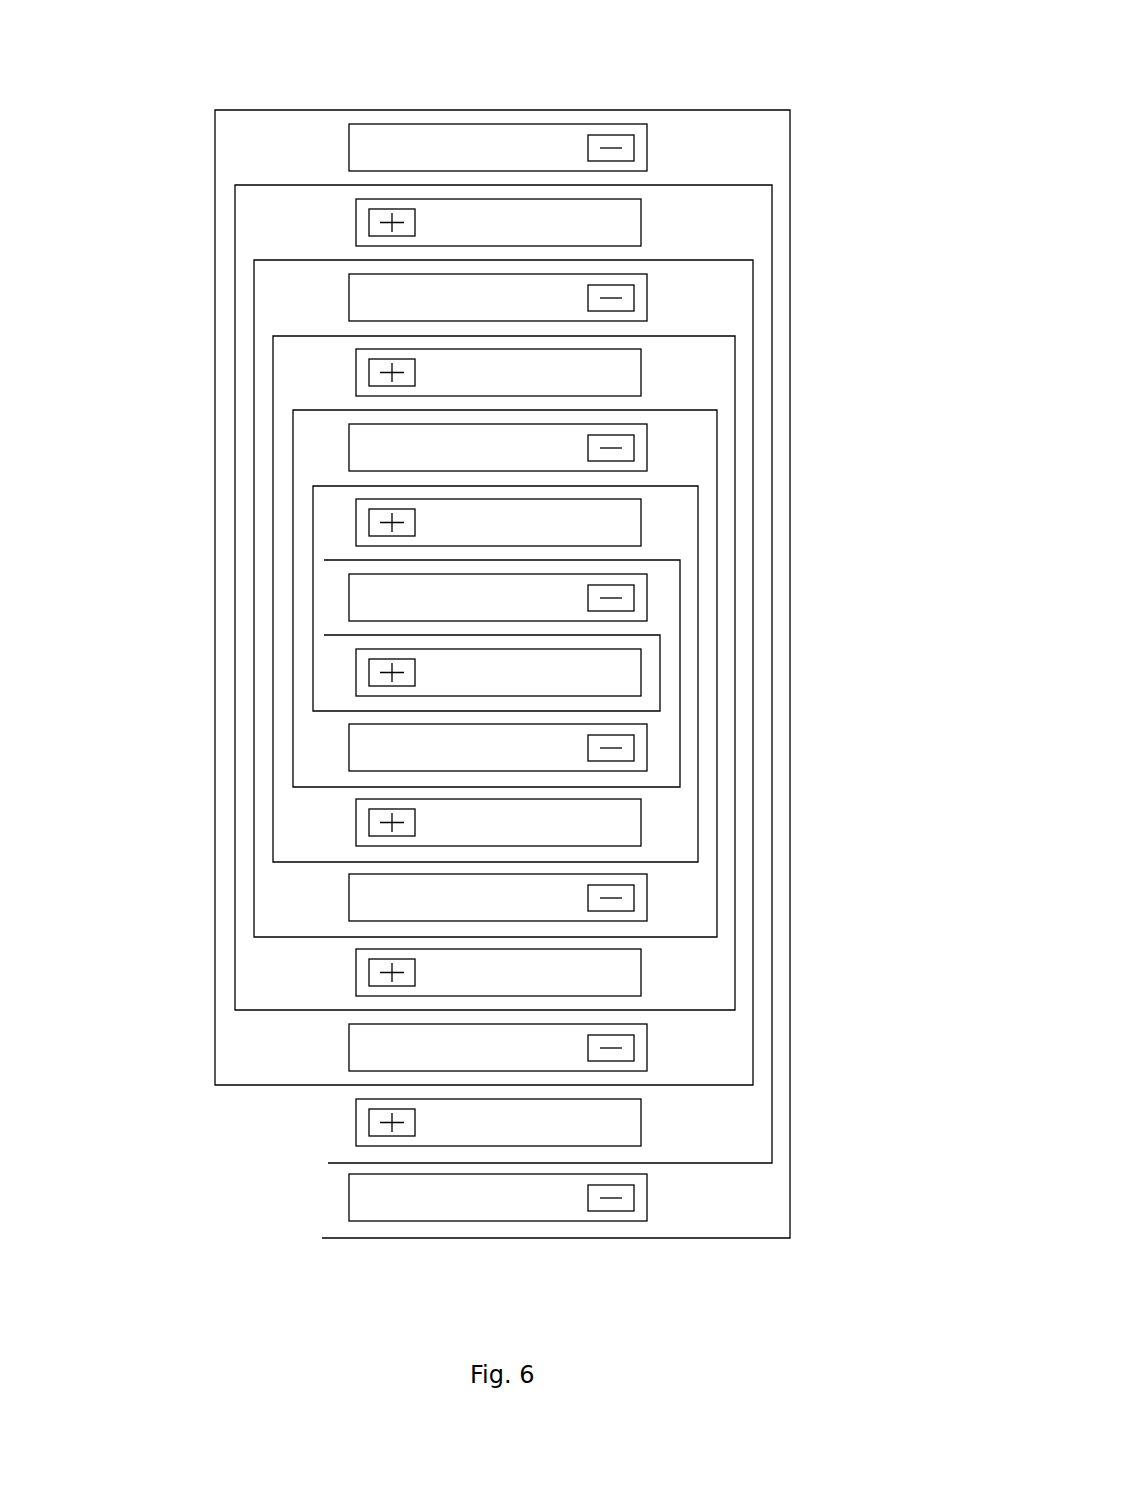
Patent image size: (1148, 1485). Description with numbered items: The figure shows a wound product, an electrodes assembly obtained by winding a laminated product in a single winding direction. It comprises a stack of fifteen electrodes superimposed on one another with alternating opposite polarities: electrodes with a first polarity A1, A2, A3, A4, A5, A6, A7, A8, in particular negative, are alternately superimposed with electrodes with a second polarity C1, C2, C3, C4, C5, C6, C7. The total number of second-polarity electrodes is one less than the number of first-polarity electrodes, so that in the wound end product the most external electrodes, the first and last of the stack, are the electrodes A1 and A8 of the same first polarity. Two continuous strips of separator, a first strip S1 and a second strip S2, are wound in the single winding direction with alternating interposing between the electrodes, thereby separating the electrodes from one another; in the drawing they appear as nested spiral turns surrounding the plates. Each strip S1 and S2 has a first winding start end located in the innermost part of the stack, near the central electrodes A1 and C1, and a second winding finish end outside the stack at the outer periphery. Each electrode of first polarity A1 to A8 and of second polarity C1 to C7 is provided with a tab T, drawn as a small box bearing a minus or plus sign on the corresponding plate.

The first strip S1 is at (534, 108).
The second strip S2 is at (714, 183).
The electrode with first polarity A1 is at (366, 592).
The electrode with first polarity A2 is at (366, 748).
The electrode with first polarity A3 is at (366, 447).
The electrode with first polarity A4 is at (366, 905).
The electrode with first polarity A5 is at (366, 302).
The electrode with first polarity A6 is at (366, 1052).
The electrode with first polarity A7 is at (366, 152).
The electrode with first polarity A8 is at (366, 1197).
The electrode with second polarity C1 is at (628, 670).
The electrode with second polarity C2 is at (615, 522).
The electrode with second polarity C3 is at (625, 826).
The electrode with second polarity C4 is at (625, 372).
The electrode with second polarity C5 is at (625, 975).
The electrode with second polarity C6 is at (625, 222).
The electrode with second polarity C7 is at (625, 1125).
The tab T is at (385, 972).